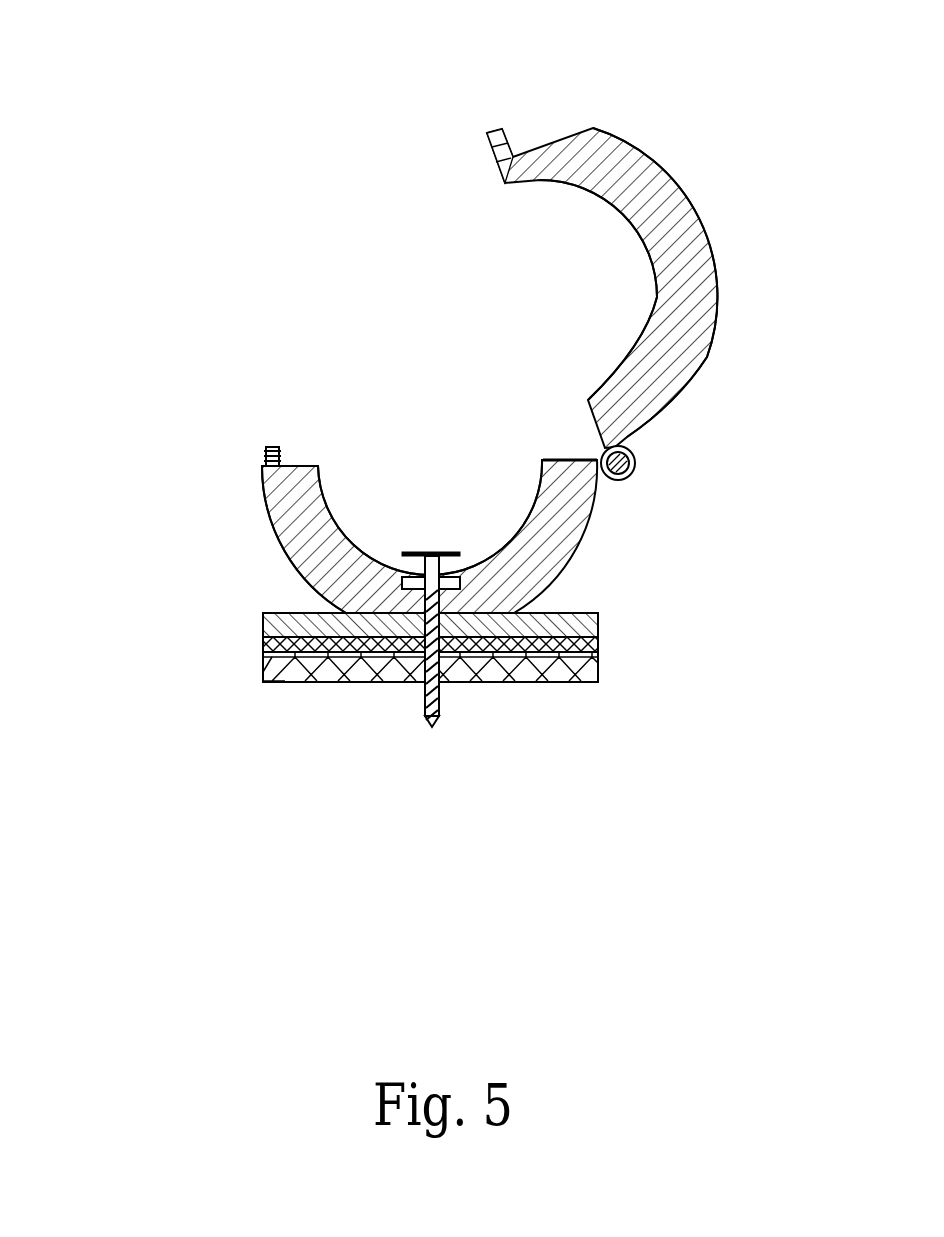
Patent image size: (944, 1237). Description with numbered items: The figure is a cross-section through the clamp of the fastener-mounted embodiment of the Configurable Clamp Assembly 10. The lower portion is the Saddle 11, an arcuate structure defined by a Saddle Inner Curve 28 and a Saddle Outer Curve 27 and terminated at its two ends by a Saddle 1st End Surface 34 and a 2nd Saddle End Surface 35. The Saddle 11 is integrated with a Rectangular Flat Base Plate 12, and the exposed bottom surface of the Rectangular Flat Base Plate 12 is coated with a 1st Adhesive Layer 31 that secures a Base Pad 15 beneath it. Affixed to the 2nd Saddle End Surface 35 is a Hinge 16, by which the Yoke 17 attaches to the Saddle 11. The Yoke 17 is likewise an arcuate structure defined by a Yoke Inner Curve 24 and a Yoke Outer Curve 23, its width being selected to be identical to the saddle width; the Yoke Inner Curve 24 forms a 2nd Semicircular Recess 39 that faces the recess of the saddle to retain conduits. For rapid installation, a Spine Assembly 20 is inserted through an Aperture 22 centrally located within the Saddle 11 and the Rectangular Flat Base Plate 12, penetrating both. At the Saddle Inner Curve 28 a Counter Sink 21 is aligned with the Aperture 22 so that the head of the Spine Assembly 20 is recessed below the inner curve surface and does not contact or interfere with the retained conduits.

The Configurable Clamp Assembly 10 is at (220, 111).
The Saddle 11 is at (277, 547).
The Rectangular Flat Base Plate 12 is at (600, 627).
The Base Pad 15 is at (260, 671).
The Hinge 16 is at (640, 468).
The Yoke 17 is at (713, 185).
The Spine Assembly 20 is at (422, 705).
The Counter Sink 21 is at (455, 573).
The Aperture 22 is at (462, 590).
The Yoke Outer Curve 23 is at (717, 310).
The Yoke Inner Curve 24 is at (657, 297).
The Saddle Outer Curve 27 is at (270, 525).
The Saddle Inner Curve 28 is at (523, 520).
The 1st Adhesive Layer 31 is at (600, 650).
The Saddle 1st End Surface 34 is at (291, 466).
The 2nd Saddle End Surface 35 is at (567, 459).
The 2nd Semicircular Recess 39 is at (598, 243).